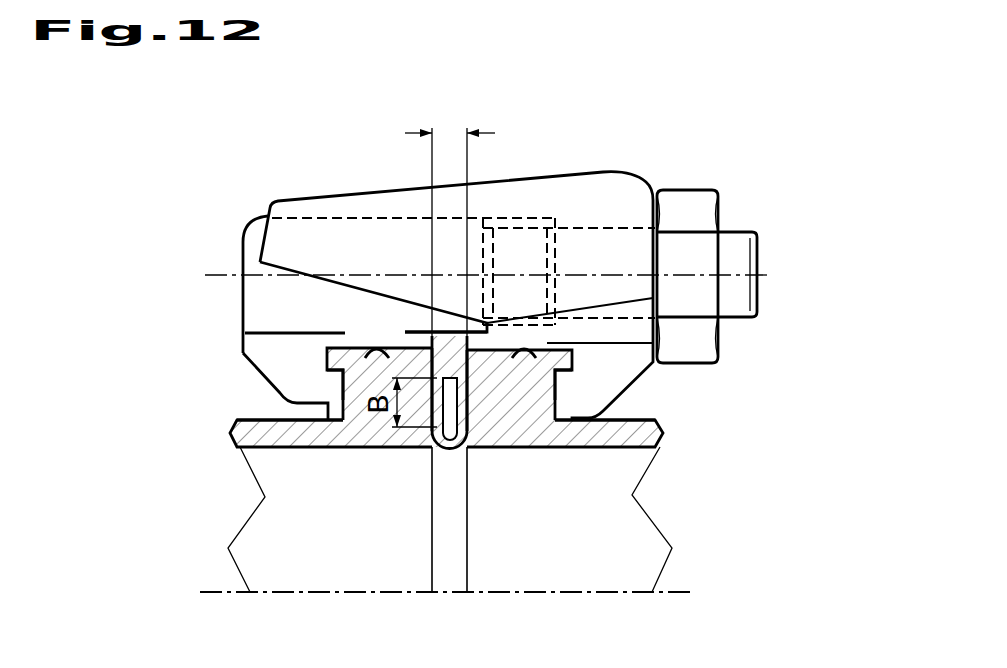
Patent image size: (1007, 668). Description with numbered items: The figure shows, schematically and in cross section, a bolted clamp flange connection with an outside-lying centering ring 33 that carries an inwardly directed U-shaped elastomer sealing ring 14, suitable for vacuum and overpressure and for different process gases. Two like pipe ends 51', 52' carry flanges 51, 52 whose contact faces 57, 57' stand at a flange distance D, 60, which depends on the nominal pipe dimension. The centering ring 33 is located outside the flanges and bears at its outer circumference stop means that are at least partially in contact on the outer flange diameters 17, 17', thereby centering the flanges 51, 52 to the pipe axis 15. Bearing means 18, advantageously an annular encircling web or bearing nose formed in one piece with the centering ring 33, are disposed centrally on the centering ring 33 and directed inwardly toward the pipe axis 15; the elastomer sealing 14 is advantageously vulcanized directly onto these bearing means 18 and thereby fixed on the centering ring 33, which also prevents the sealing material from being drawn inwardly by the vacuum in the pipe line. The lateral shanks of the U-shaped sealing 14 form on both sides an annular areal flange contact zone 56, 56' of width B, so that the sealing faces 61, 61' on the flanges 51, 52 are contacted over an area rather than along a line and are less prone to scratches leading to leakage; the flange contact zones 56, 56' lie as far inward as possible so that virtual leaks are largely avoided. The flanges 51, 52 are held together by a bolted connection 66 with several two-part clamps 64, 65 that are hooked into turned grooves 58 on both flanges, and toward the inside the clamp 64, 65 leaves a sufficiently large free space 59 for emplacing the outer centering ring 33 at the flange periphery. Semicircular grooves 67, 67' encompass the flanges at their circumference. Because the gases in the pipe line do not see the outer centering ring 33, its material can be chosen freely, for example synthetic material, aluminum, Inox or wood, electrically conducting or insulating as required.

The U-shaped elastomer sealing ring 14 is at (429, 449).
The pipe axis 15 is at (633, 592).
The outer flange diameter 17 is at (297, 274).
The outer flange diameter 17' is at (579, 232).
The bearing means 18 is at (449, 428).
The centering ring 33 is at (450, 357).
The flange 51 is at (267, 423).
The pipe end 51' is at (222, 433).
The flange 52 is at (664, 426).
The pipe end 52' is at (711, 435).
The flange contact zone 56 is at (267, 379).
The flange contact zone 56' is at (667, 385).
The contact face 57 is at (232, 519).
The contact face 57' is at (676, 519).
The turned groove 58 is at (340, 395).
The free space 59 is at (417, 323).
The flange distance D 60 is at (423, 112).
The sealing face 61 is at (257, 314).
The sealing face 61' is at (670, 316).
The clamp part 64 is at (318, 305).
The clamp part 65 is at (520, 195).
The bolted connection 66 is at (706, 205).
The semicircular groove 67 is at (267, 329).
The semicircular groove 67' is at (667, 269).